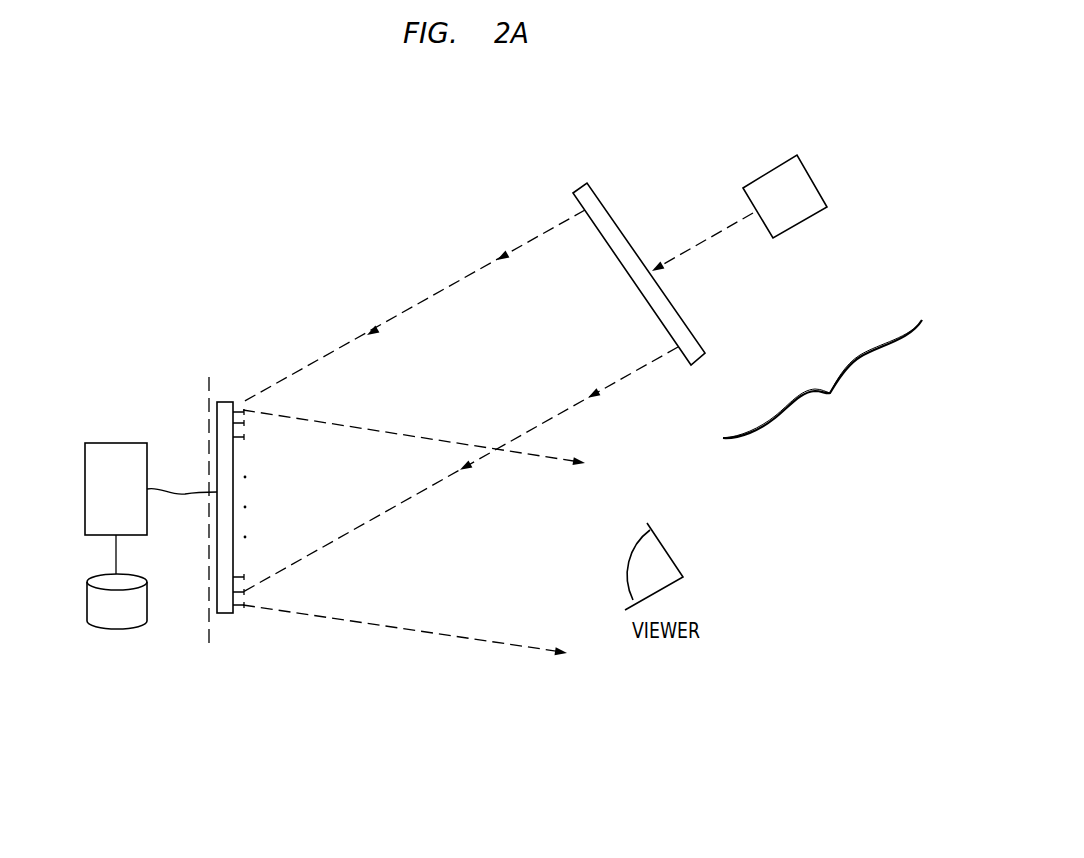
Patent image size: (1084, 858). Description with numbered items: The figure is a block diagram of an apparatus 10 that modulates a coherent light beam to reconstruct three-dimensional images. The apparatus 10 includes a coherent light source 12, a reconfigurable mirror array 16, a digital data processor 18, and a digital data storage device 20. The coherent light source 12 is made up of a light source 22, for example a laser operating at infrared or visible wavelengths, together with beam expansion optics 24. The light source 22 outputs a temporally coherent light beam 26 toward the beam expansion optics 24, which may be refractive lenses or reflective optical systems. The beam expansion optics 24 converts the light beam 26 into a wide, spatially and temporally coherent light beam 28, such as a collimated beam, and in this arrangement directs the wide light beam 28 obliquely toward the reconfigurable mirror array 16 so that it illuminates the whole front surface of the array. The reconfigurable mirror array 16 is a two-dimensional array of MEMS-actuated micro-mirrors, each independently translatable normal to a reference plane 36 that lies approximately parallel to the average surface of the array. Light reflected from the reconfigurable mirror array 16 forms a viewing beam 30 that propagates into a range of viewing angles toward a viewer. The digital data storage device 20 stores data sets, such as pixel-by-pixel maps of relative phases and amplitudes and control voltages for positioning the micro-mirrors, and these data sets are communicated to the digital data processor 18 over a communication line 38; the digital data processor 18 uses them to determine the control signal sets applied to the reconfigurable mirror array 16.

The apparatus 10 is at (238, 758).
The coherent light source 12 is at (822, 379).
The reconfigurable mirror array 16 is at (237, 628).
The digital data processor 18 is at (128, 508).
The digital data storage device 20 is at (129, 624).
The light source 22 is at (798, 210).
The beam expansion optics 24 is at (702, 356).
The light beam 26 is at (702, 245).
The wide light beam 28 is at (512, 366).
The viewing beam 30 is at (459, 580).
The reference plane 36 is at (208, 377).
The communication line 38 is at (115, 562).